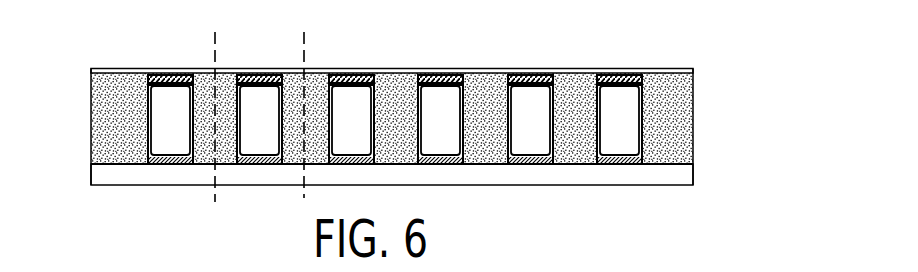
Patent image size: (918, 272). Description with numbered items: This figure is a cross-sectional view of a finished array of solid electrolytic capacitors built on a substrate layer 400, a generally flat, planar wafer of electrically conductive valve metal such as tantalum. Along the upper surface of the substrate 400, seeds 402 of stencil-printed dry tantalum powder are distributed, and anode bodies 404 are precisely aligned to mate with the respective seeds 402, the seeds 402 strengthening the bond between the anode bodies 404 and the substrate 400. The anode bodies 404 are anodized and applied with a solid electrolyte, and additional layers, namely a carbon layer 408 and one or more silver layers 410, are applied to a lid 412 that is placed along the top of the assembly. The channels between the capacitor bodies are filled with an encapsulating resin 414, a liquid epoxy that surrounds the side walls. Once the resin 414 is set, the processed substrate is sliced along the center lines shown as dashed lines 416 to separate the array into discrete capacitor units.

The substrate layer 400 is at (108, 178).
The seeds 402 is at (172, 165).
The anode bodies 404 is at (160, 134).
The carbon layer 408 is at (534, 80).
The silver layers 410 is at (617, 78).
The lid 412 is at (392, 69).
The encapsulating resin 414 is at (482, 87).
The dashed lines 416 is at (215, 198).